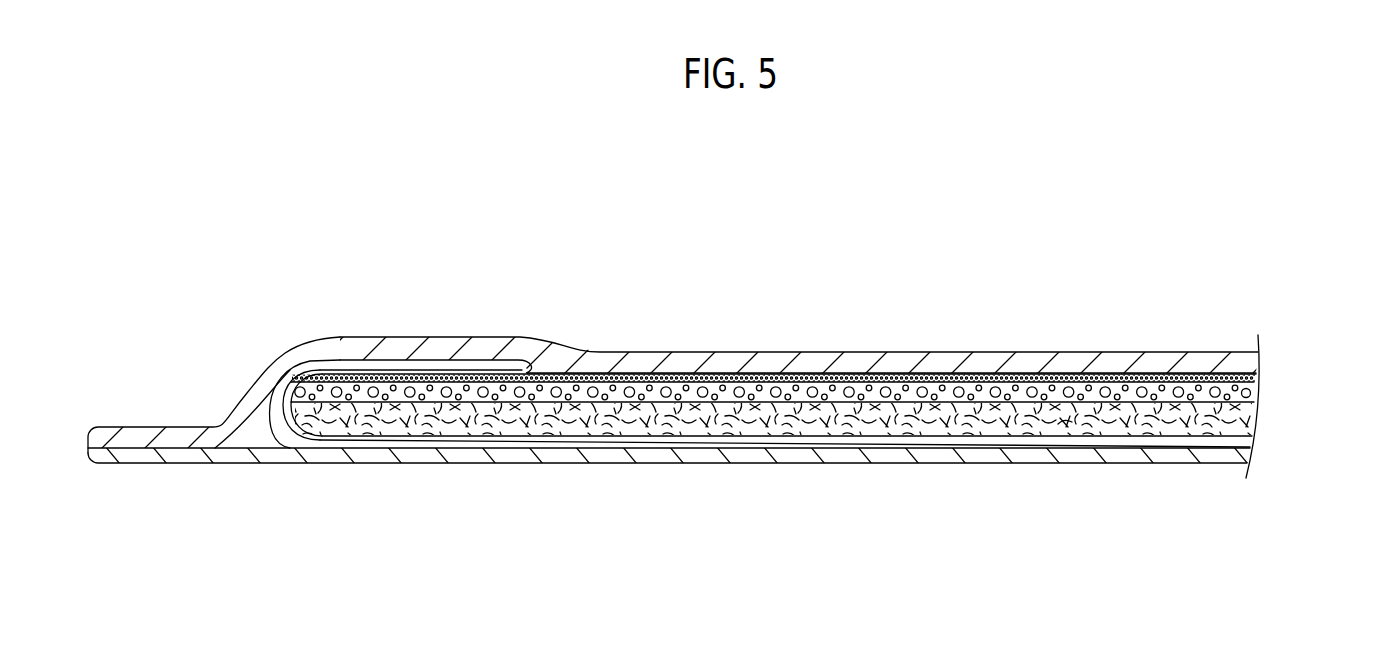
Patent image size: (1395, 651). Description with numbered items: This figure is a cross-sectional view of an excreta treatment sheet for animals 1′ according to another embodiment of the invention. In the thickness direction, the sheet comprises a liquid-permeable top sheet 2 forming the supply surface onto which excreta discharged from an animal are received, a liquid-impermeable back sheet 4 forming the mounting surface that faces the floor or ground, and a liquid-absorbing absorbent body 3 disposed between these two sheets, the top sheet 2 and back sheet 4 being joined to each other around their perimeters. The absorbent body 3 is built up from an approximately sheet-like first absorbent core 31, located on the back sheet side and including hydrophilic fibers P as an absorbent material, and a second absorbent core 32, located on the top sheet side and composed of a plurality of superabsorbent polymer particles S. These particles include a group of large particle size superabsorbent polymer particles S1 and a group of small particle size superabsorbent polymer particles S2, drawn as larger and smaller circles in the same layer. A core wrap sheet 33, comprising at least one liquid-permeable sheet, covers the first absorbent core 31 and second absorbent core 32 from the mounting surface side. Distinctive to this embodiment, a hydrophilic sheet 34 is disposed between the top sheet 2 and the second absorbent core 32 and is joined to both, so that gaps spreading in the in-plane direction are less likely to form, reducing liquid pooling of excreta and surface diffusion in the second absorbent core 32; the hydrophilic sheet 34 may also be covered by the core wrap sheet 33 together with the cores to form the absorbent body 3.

The excreta treatment sheet for animals 1′ is at (1160, 213).
The top sheet 2 is at (1217, 362).
The absorbent body 3 is at (822, 391).
The first absorbent core 31 is at (812, 466).
The second absorbent core 32 is at (810, 326).
The core wrap sheet 33 is at (824, 441).
The hydrophilic sheet 34 is at (1248, 377).
The back sheet 4 is at (1195, 457).
The superabsorbent polymer particles S is at (1066, 324).
The large particle size superabsorbent polymer particles S1 is at (1031, 387).
The small particle size superabsorbent polymer particles S2 is at (1088, 385).
The hydrophilic fibers P is at (1065, 422).